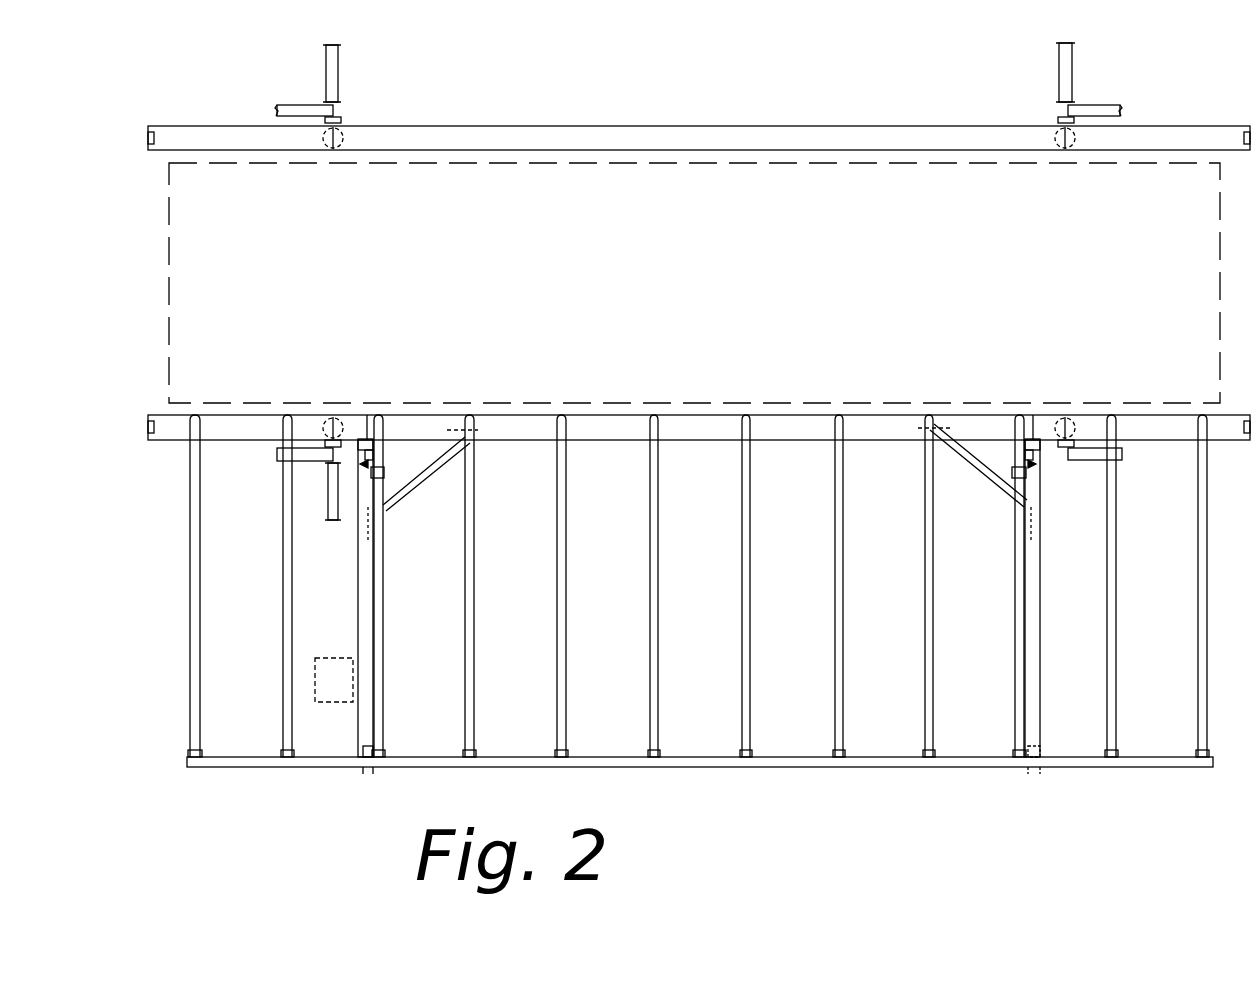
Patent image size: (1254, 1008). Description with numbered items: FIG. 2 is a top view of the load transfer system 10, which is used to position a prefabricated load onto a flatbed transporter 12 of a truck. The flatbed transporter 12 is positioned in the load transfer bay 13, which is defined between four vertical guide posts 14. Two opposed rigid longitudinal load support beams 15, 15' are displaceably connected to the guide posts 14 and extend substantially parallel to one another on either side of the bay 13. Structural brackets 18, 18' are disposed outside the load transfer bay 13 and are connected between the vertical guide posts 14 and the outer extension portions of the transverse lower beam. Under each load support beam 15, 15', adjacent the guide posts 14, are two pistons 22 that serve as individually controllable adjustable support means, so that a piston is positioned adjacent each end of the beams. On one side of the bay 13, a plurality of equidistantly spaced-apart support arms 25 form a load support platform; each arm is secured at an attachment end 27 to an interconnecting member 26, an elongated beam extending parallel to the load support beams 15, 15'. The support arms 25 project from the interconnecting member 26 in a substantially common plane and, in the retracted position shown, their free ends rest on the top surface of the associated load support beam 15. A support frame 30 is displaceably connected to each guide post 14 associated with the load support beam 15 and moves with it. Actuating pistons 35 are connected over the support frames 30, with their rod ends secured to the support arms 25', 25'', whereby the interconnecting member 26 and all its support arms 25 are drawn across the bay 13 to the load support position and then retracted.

The load transfer system 10 is at (722, 88).
The flatbed transporter 12 is at (158, 272).
The load transfer bay 13 is at (492, 294).
The guide post 14 is at (340, 102).
The load support beam 15 is at (699, 403).
The load support beam 15' is at (699, 178).
The structural bracket 18 is at (284, 315).
The structural bracket 18' is at (1030, 65).
The piston 22 is at (340, 146).
The support arm 25 is at (698, 586).
The support arm 25' is at (419, 586).
The support arm 25'' is at (977, 586).
The interconnecting member 26 is at (608, 757).
The attachment end 27 is at (655, 767).
The support frame 30 is at (358, 722).
The actuating piston 35 is at (366, 740).